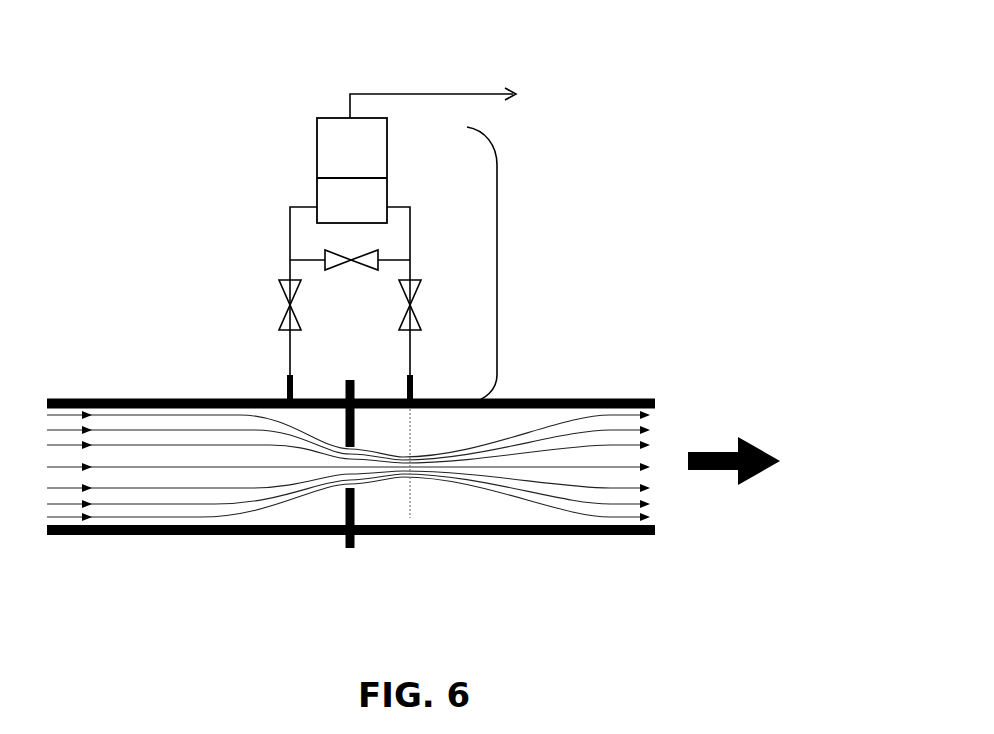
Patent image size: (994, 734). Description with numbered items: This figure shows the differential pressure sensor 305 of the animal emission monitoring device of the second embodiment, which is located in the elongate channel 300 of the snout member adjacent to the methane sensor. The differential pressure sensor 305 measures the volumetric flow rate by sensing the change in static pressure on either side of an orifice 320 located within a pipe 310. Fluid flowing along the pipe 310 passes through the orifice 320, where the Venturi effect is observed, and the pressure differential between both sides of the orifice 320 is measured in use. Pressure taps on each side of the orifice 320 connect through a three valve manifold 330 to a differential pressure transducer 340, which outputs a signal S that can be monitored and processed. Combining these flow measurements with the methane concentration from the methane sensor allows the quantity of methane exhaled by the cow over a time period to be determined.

The elongate channel 300 is at (786, 251).
The differential pressure sensor 305 is at (497, 267).
The pipe 310 is at (90, 537).
The orifice 320 is at (392, 520).
The three valve manifold 330 is at (218, 288).
The differential pressure transducer 340 is at (327, 117).